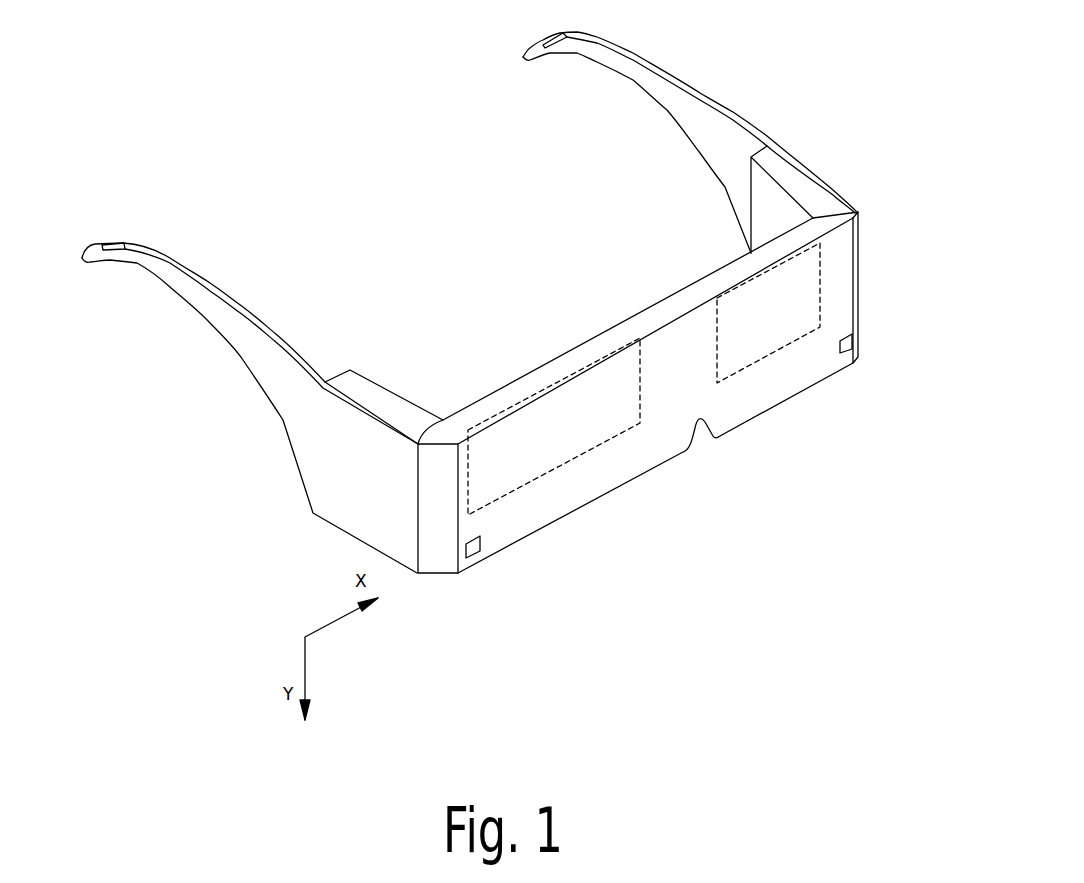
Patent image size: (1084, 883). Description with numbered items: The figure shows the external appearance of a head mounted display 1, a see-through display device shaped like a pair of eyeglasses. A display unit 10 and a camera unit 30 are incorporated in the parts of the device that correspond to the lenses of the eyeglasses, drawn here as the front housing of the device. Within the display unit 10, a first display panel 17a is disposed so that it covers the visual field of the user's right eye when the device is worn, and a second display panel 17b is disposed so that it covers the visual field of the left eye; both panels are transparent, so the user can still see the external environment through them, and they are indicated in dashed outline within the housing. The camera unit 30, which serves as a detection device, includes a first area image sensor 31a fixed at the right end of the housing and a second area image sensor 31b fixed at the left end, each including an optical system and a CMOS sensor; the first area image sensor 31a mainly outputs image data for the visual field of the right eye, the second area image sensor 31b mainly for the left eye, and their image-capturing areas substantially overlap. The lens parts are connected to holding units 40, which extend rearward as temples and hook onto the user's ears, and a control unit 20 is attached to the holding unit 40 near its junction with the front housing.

The head mounted display 1 is at (124, 415).
The display unit 10 is at (627, 318).
The first display panel 17a is at (518, 397).
The second display panel 17b is at (750, 278).
The control unit 20 is at (350, 383).
The camera unit 30 is at (647, 475).
The first area image sensor 31a is at (480, 550).
The second area image sensor 31b is at (845, 350).
The holding unit 40 is at (222, 298).